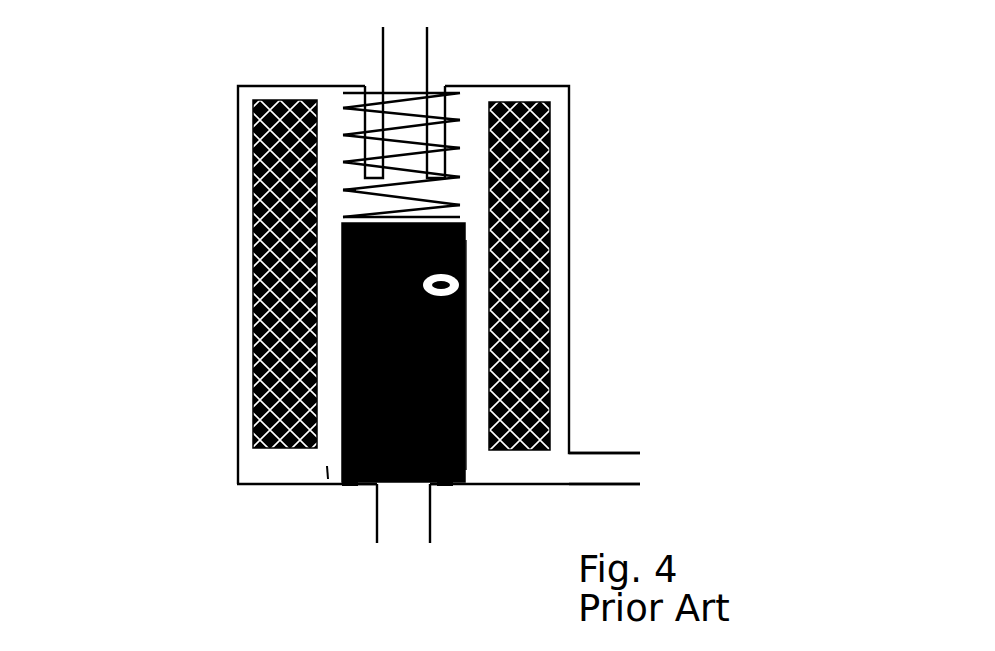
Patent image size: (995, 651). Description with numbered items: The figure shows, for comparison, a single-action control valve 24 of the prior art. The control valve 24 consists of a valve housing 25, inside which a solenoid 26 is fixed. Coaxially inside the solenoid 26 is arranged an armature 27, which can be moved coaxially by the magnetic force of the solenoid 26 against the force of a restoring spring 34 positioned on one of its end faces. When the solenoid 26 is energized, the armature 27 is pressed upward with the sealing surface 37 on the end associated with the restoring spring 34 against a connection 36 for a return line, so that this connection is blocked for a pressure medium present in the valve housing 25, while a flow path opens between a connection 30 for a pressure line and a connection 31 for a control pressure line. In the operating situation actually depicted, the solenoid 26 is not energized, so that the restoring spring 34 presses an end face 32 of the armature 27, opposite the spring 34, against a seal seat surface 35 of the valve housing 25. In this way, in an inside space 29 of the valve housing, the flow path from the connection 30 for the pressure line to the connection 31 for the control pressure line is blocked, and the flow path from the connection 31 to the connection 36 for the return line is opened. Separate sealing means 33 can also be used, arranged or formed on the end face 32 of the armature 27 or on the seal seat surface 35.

The single-action control valve 24 is at (130, 91).
The valve housing 25 is at (238, 198).
The solenoid 26 is at (433, 166).
The armature 27 is at (460, 283).
The inside space 29 is at (474, 385).
The connection for a pressure line 30 is at (377, 503).
The connection for a control pressure line 31 is at (617, 453).
The end face of the armature 32 is at (401, 496).
The sealing means 33 is at (377, 485).
The restoring spring 34 is at (343, 193).
The seal seat surface 35 is at (320, 477).
The connection for a return line 36 is at (448, 216).
The sealing surface 37 is at (550, 226).